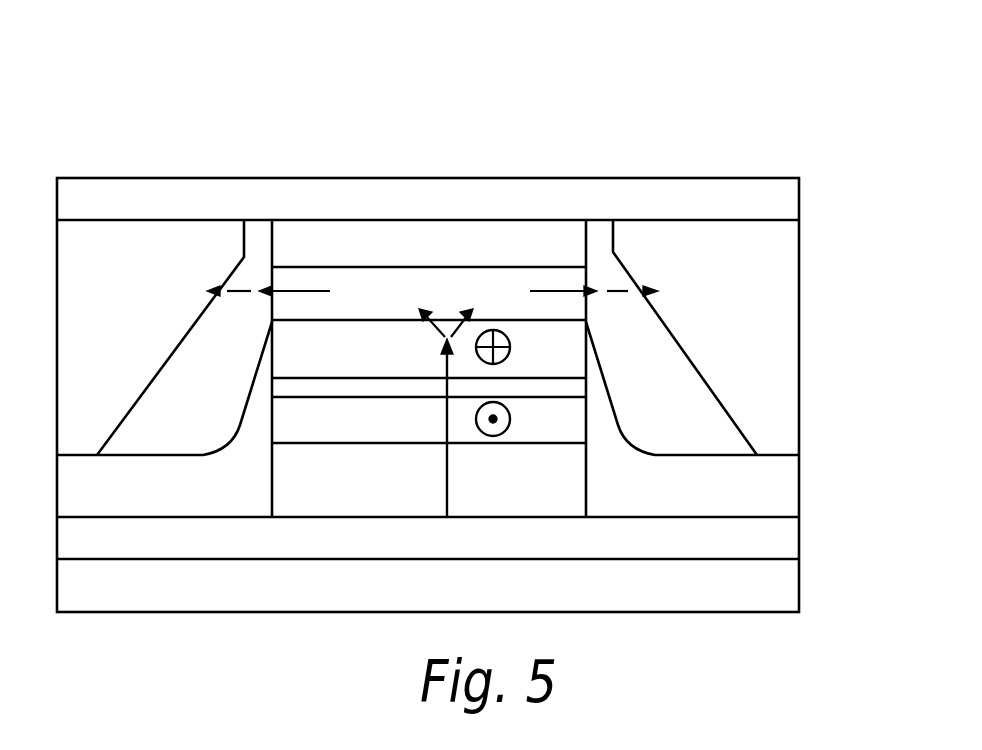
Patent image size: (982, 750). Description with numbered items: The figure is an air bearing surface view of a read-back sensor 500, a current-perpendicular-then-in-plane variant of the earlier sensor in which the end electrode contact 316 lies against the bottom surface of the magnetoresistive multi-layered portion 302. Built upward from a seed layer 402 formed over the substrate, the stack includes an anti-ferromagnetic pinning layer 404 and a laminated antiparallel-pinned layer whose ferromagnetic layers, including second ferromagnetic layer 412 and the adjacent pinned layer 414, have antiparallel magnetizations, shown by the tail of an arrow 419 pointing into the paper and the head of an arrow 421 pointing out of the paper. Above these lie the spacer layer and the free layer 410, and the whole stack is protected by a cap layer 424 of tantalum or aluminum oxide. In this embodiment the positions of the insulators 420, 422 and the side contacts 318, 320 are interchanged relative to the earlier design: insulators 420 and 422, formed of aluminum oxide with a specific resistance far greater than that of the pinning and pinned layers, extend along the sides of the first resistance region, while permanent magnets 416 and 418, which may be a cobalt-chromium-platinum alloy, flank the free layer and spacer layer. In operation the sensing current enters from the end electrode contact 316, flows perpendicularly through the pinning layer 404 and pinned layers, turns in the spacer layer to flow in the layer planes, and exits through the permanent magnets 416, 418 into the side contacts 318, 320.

The read-back sensor 500 is at (412, 95).
The magnetoresistive multi-layered portion 302 is at (258, 277).
The cap layer 424 is at (672, 188).
The free layer 410 is at (570, 250).
The second ferromagnetic layer 412 is at (321, 365).
The second pinned layer AP2 414 is at (335, 432).
The arrow tail 419 is at (570, 363).
The arrow head 421 is at (510, 416).
The anti-ferromagnetic pinning layer 404 is at (533, 505).
The side contact 318 is at (140, 341).
The side contact 320 is at (760, 312).
The permanent magnet 416 is at (195, 435).
The permanent magnet 418 is at (690, 435).
The insulator 420 is at (170, 511).
The insulator 422 is at (700, 511).
The end electrode contact 316 is at (573, 305).
The seed layer 402 is at (730, 598).